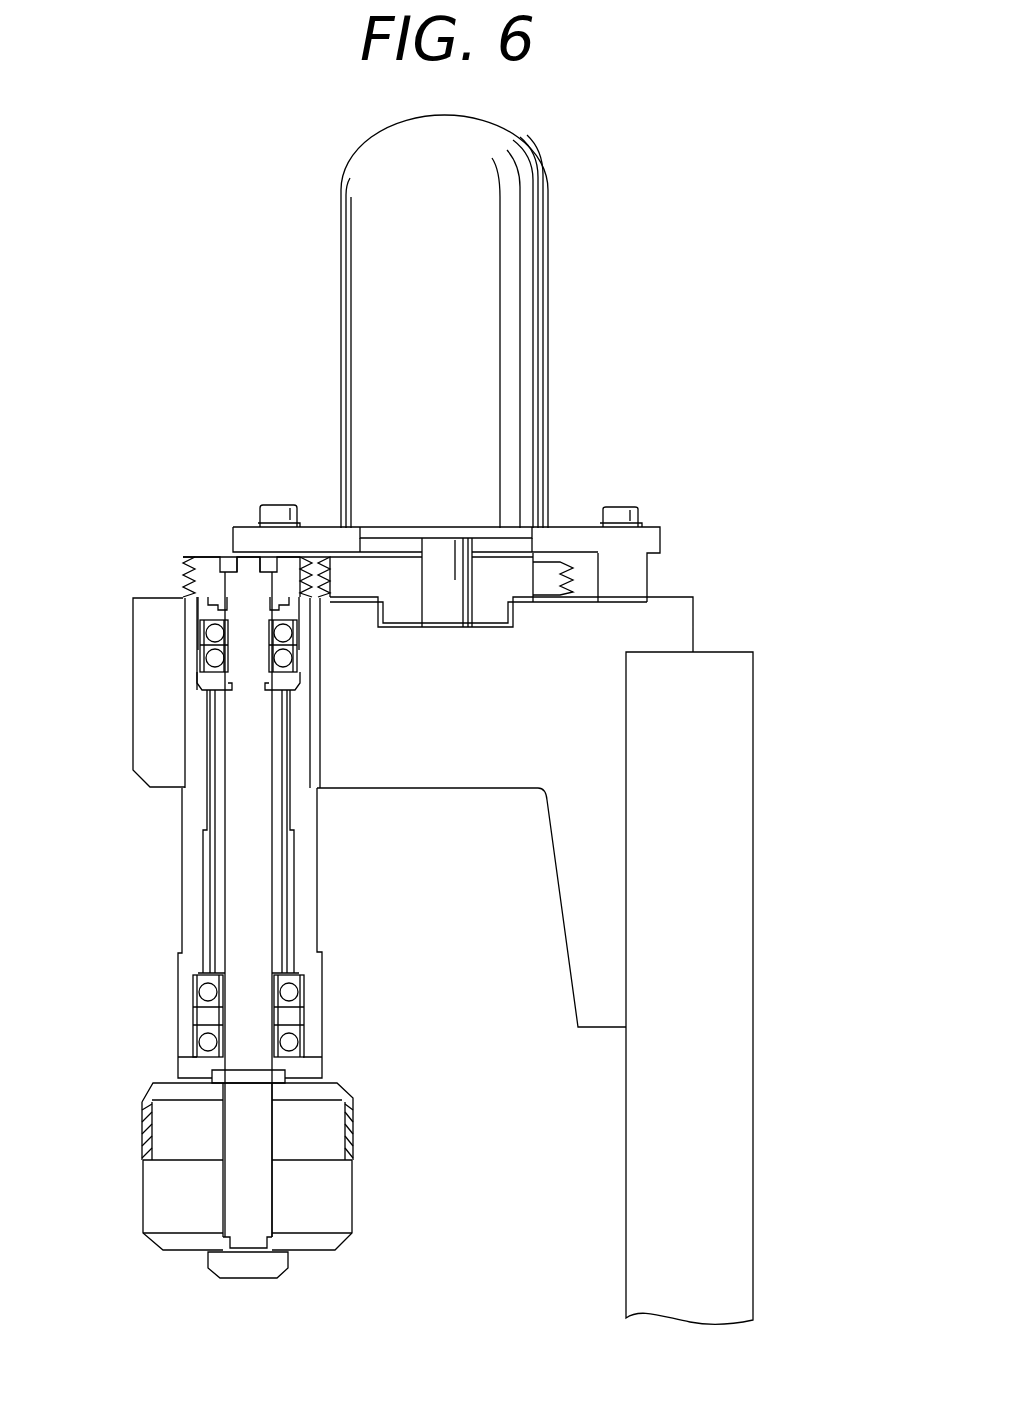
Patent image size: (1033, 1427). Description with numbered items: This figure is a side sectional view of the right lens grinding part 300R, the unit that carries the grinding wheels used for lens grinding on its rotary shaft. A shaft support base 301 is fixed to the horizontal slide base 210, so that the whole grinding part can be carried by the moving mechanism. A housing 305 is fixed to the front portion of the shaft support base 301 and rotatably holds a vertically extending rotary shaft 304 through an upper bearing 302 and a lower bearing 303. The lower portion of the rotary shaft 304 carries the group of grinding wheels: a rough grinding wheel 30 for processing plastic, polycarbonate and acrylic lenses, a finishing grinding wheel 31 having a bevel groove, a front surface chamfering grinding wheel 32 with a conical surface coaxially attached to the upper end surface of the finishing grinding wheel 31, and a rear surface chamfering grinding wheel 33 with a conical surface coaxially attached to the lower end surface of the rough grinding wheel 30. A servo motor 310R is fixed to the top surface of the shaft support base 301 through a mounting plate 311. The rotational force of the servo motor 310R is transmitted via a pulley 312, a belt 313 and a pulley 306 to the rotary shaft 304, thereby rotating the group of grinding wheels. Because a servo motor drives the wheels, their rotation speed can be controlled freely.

The rough grinding wheel 30 is at (345, 1200).
The finishing grinding wheel 31 is at (335, 1135).
The front surface chamfering grinding wheel 32 is at (350, 1090).
The rear surface chamfering grinding wheel 33 is at (345, 1246).
The horizontal slide base 210 is at (734, 981).
The right lens grinding part 300R is at (655, 462).
The shaft support base 301 is at (490, 770).
The bearing 302 is at (197, 650).
The bearing 303 is at (205, 1017).
The rotary shaft 304 is at (240, 878).
The housing 305 is at (187, 835).
The pulley 306 is at (204, 564).
The servo motor 310R is at (508, 362).
The mounting plate 311 is at (647, 542).
The pulley 312 is at (552, 568).
The belt 313 is at (573, 586).